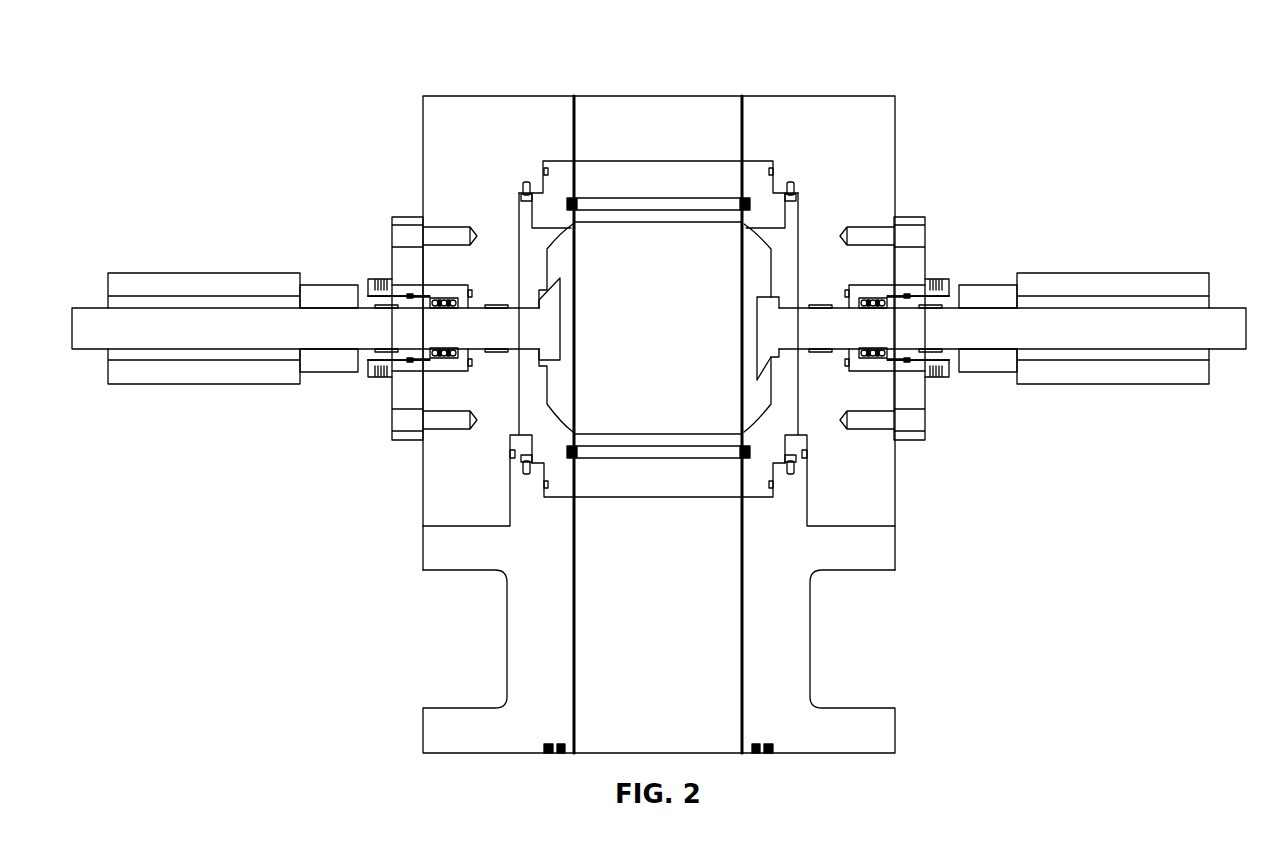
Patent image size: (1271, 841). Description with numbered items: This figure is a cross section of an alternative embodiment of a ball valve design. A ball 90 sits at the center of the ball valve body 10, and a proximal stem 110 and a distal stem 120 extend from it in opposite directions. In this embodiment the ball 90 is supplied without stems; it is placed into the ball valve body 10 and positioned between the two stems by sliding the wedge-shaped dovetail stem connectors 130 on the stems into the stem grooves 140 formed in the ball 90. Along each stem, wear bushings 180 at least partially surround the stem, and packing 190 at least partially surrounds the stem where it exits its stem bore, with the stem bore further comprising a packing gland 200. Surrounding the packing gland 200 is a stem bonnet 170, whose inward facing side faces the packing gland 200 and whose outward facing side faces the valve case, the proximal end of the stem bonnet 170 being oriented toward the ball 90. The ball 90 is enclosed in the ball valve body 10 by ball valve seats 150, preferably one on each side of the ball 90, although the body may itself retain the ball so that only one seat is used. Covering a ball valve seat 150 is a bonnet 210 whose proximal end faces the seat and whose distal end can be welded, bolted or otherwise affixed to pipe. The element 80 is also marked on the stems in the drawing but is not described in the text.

The ball valve body 10 is at (445, 122).
The intermediate housing 80 is at (270, 369).
The ball 90 is at (750, 402).
The proximal stem 110 is at (212, 323).
The distal stem 120 is at (1122, 322).
The dovetail stem connector 130 is at (766, 335).
The stem groove 140 is at (772, 287).
The ball valve seat 150 is at (603, 177).
The stem bonnet 170 is at (403, 398).
The wear bushing 180 is at (930, 307).
The packing 190 is at (447, 302).
The packing gland 200 is at (364, 352).
The bonnet 210 is at (792, 613).